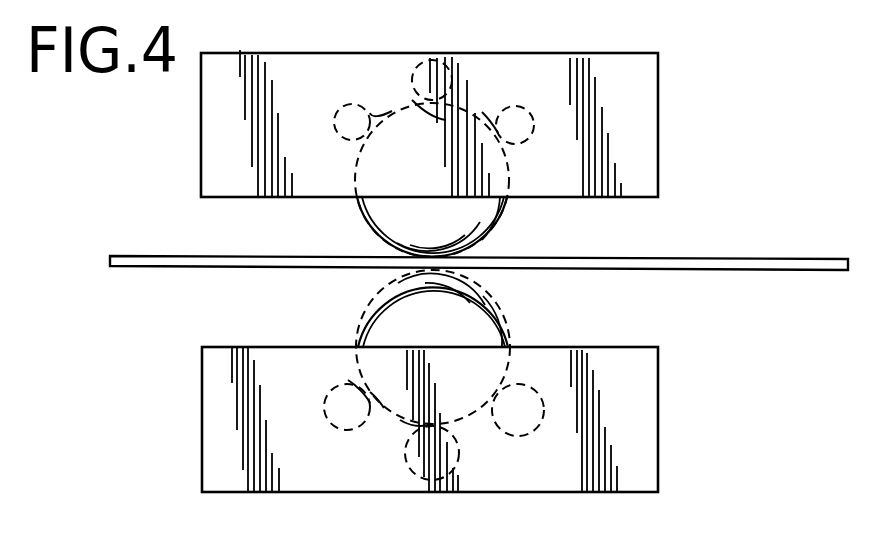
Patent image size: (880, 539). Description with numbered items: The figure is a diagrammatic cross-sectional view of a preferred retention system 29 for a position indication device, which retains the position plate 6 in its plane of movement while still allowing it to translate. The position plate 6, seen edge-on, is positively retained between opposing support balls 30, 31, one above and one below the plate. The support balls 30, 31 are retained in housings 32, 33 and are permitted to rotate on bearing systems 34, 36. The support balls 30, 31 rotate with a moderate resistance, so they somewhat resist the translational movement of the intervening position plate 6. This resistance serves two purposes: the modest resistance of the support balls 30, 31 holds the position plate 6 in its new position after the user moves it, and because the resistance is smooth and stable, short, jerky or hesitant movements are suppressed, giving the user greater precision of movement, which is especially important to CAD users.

The retention system 29 is at (178, 399).
The position plate 6 is at (697, 258).
The support ball 30 is at (498, 220).
The support ball 31 is at (505, 317).
The housing 32 is at (658, 106).
The housing 33 is at (658, 410).
The bearing system 34 is at (512, 117).
The bearing system 36 is at (531, 433).